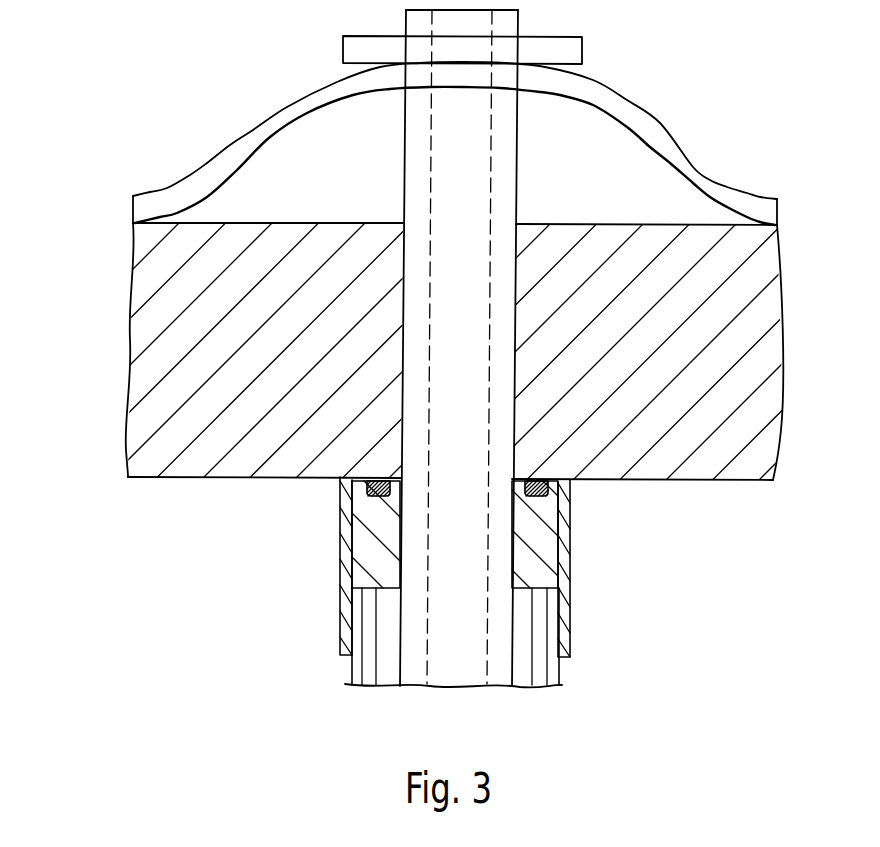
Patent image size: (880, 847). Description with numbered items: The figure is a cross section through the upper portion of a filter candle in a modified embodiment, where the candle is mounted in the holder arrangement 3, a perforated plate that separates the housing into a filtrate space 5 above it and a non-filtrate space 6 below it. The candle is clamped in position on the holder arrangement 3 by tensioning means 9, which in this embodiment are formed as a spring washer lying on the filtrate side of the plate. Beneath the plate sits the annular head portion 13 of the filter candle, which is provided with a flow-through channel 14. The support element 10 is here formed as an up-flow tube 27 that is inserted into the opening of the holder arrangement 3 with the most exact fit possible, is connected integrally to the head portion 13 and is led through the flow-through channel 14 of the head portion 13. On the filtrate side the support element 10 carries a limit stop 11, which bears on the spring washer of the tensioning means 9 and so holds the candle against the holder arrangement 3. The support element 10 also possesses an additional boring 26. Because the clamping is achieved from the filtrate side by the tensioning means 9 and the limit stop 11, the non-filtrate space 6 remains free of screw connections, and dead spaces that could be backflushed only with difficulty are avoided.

The holder arrangement 3 is at (150, 335).
The filtrate space 5 is at (417, 143).
The tensioning means 9 is at (185, 193).
The support element 10 is at (445, 196).
The limit stop 11 is at (344, 47).
The non-filtrate space 6 is at (387, 581).
The head portion 13 is at (352, 572).
The flow-through channel 14 is at (442, 515).
The boring 26 is at (442, 636).
The up-flow tube 27 is at (512, 630).